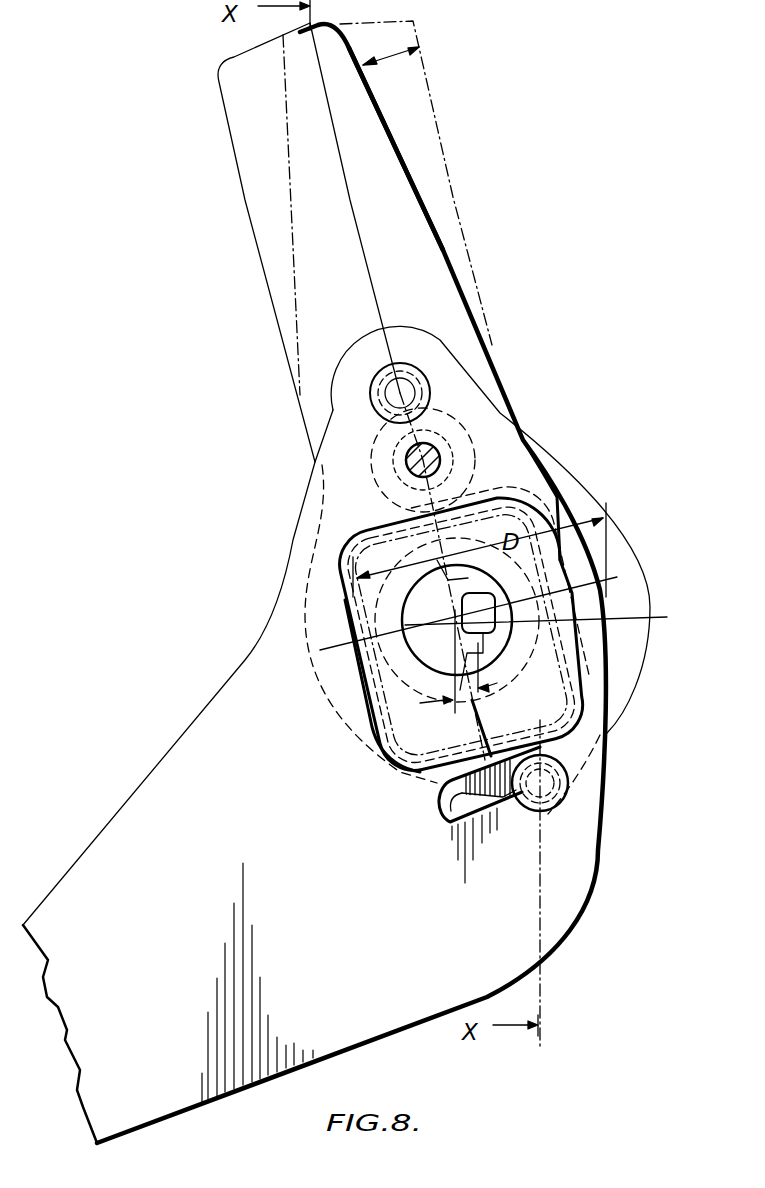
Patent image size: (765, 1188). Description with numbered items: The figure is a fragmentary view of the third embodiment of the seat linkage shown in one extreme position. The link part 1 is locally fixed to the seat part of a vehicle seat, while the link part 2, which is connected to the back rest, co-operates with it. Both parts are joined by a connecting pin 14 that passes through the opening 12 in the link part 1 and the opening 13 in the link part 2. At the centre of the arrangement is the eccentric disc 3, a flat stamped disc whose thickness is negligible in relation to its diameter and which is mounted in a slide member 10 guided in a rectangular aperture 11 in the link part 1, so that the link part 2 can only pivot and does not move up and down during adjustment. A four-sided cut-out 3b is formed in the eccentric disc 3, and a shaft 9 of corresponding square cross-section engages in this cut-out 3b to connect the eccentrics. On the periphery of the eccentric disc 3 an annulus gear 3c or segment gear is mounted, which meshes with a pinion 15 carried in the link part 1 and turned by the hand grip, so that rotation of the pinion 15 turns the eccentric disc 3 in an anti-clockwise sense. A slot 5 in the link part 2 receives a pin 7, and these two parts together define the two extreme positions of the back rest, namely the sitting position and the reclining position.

The link part 1 is at (530, 940).
The link part 2 is at (431, 228).
The eccentric disc 3 is at (503, 620).
The four-sided cut-out 3b is at (497, 633).
The annulus gear 3c is at (478, 460).
The slot 5 is at (455, 820).
The pin 7 is at (548, 785).
The shaft 9 is at (461, 612).
The slide member 10 is at (350, 556).
The rectangular aperture 11 is at (380, 755).
The opening 12 is at (433, 378).
The opening 13 is at (430, 397).
The connecting pin 14 is at (412, 363).
The pinion 15 is at (402, 461).